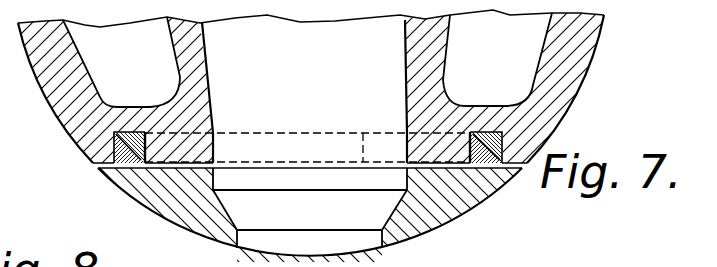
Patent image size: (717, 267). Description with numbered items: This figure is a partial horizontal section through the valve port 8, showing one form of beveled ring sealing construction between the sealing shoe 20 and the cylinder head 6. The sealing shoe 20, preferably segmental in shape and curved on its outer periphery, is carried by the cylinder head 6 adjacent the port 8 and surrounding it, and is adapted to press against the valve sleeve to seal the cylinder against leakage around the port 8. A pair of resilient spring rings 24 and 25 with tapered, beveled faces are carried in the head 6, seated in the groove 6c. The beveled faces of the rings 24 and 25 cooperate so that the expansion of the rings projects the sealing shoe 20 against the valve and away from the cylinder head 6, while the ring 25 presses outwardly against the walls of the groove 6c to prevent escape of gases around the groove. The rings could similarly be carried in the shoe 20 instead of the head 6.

The cylinder head 6 is at (204, 69).
The groove 6c is at (116, 132).
The valve port 8 is at (317, 150).
The sealing shoe 20 is at (447, 207).
The spring ring 24 is at (480, 132).
The spring ring 25 is at (116, 154).